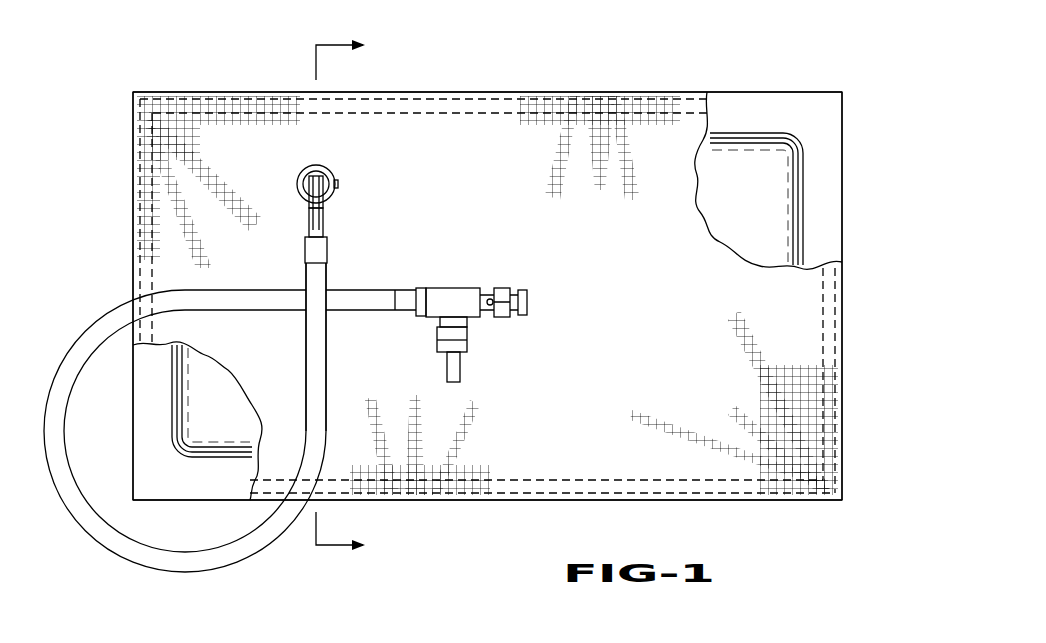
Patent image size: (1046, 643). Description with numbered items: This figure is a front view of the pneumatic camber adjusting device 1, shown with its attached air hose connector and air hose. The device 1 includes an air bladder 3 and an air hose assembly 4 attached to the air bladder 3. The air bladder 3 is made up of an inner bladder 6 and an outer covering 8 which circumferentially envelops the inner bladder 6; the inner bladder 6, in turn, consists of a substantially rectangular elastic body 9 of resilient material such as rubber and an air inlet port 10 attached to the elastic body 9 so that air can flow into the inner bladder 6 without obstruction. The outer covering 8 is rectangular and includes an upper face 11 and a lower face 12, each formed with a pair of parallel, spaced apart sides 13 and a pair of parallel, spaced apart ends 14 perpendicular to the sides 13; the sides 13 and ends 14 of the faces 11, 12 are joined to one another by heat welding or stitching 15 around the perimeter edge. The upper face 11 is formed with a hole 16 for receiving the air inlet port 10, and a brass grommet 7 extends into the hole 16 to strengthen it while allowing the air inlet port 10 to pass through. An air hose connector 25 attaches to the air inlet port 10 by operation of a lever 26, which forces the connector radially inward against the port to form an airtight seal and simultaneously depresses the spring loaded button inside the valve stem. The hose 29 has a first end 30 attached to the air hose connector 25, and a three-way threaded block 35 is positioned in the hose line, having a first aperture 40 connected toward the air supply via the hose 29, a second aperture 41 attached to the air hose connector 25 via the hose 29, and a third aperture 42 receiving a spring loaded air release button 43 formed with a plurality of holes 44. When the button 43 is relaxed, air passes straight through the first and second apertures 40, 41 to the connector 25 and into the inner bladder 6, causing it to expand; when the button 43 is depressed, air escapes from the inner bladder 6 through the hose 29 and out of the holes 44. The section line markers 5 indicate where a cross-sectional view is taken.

The pneumatic camber adjusting device 1 is at (453, 251).
The air bladder 3 is at (617, 92).
The air hose assembly 4 is at (323, 334).
The section line 5 is at (350, 297).
The inner bladder 6 is at (795, 170).
The brass grommet 7 is at (319, 181).
The outer covering 8 is at (505, 128).
The elastic body 9 is at (800, 199).
The air inlet port 10 is at (319, 126).
The upper face 11 is at (437, 148).
The lower face 12 is at (822, 236).
The sides 13 is at (135, 155).
The ends 14 is at (477, 92).
The heat welding or stitching 15 is at (838, 300).
The hole 16 is at (333, 190).
The air hose connector 25 is at (300, 187).
The lever 26 is at (326, 247).
The hose 29 is at (172, 566).
The first end 30 is at (327, 278).
The three-way threaded block 35 is at (509, 326).
The first aperture 40 is at (456, 384).
The second aperture 41 is at (403, 306).
The third aperture 42 is at (479, 292).
The spring loaded air release button 43 is at (528, 297).
The holes 44 is at (493, 307).